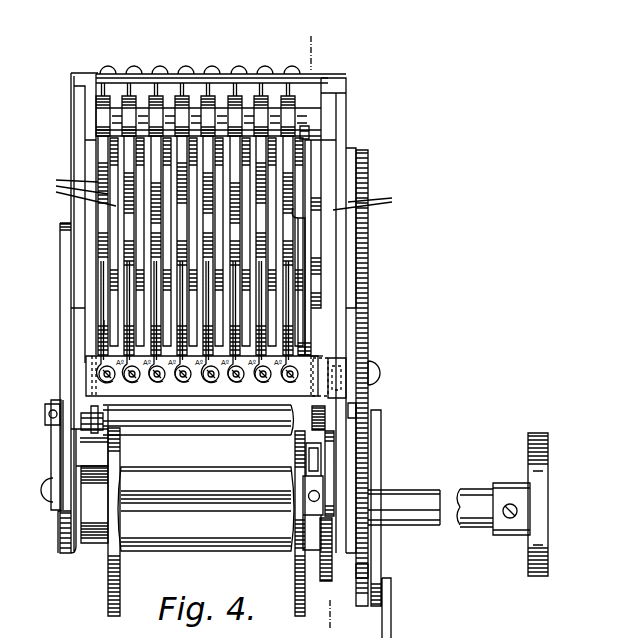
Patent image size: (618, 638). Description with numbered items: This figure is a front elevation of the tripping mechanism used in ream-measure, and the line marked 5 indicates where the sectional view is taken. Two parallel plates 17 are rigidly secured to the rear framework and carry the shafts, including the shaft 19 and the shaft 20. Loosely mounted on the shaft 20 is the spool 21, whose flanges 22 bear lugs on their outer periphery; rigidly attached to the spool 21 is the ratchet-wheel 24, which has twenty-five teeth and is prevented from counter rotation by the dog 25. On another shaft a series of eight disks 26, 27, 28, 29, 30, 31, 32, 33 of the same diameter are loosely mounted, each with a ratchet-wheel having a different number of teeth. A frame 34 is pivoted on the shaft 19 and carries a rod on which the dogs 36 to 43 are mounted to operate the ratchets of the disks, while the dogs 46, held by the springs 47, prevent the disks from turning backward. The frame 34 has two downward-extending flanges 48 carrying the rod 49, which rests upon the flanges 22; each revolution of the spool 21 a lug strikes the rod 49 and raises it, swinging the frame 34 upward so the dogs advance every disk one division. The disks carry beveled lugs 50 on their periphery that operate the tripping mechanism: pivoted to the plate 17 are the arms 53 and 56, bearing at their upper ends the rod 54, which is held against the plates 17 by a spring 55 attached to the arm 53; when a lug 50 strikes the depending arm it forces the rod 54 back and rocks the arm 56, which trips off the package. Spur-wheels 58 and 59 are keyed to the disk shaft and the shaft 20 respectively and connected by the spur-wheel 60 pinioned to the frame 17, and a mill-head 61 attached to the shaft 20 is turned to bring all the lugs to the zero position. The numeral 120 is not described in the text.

The section line 5 5 is at (321, 327).
The dogs 46 is at (98, 88).
The springs 47 is at (127, 80).
The beveled lugs 50 is at (302, 125).
The spur-wheel 58 is at (362, 160).
The springs 120 is at (223, 191).
The parallel plates 17 is at (53, 300).
The dog 43 is at (98, 318).
The dog 36 is at (297, 292).
The disk 26 is at (303, 318).
The frame 34 is at (318, 350).
The shaft 19 is at (330, 362).
The spur-wheel 60 is at (362, 358).
The rod 54 is at (348, 403).
The downward-extending flanges 48 is at (318, 413).
The spring 55 is at (37, 412).
The arm 53 is at (44, 452).
The flanges 22 is at (104, 448).
The spool 21 is at (170, 459).
The rod 49 is at (220, 427).
The arm 56 is at (373, 425).
The dog 25 is at (327, 460).
The shaft 20 is at (393, 483).
The mill-head 61 is at (535, 478).
The spur-wheel 59 is at (362, 562).
The ratchet-wheel 24 is at (317, 575).
The disk 33 is at (112, 381).
The disk 32 is at (137, 381).
The disk 31 is at (163, 381).
The disk 30 is at (189, 381).
The disk 29 is at (216, 381).
The disk 28 is at (242, 381).
The disk 27 is at (276, 381).